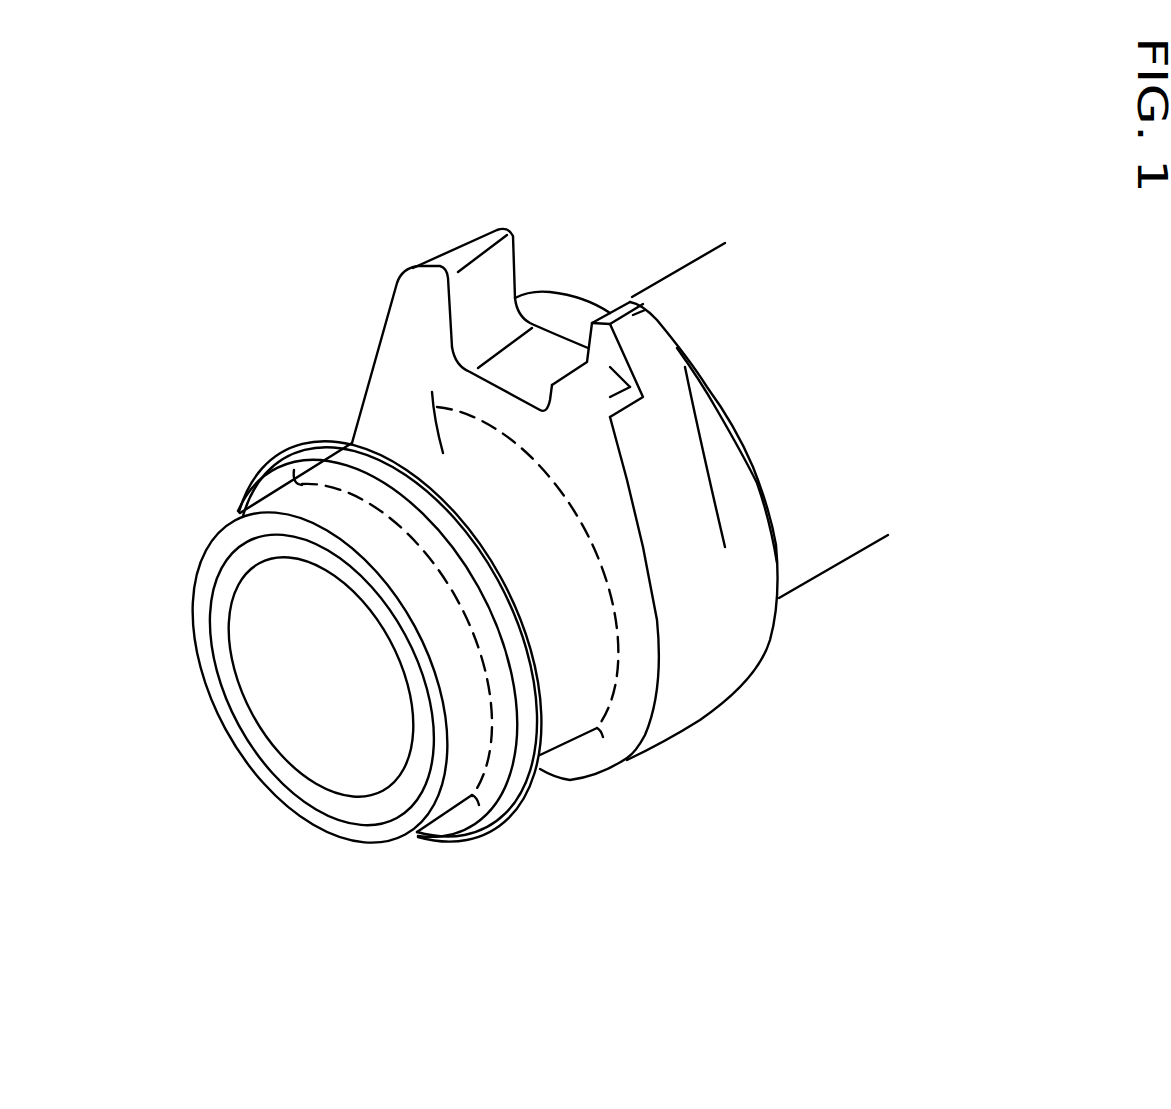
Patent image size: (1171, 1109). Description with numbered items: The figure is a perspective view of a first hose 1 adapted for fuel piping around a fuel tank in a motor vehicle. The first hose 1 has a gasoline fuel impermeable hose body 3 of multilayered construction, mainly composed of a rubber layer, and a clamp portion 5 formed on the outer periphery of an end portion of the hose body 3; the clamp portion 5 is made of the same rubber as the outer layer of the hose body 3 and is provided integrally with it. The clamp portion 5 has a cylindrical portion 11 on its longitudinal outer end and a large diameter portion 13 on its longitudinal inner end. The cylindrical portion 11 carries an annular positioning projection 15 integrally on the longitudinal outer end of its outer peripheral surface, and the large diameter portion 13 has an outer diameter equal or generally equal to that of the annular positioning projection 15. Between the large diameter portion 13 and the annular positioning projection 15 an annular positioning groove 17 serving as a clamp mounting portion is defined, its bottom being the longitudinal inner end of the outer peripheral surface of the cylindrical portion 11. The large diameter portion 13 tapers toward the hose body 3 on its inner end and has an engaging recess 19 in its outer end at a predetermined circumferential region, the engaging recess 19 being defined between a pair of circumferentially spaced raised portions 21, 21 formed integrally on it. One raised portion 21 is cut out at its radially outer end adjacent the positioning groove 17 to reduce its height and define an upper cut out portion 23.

The first hose 1 is at (108, 200).
The hose body 3 is at (817, 533).
The clamp portion 5 is at (660, 769).
The cylindrical portion 11 is at (535, 795).
The large diameter portion 13 is at (718, 715).
The annular positioning projection 15 is at (297, 445).
The annular positioning groove 17 is at (420, 421).
The engaging recess 19 is at (538, 356).
The raised portions 21 is at (462, 248).
The upper cut out portion 23 is at (636, 381).